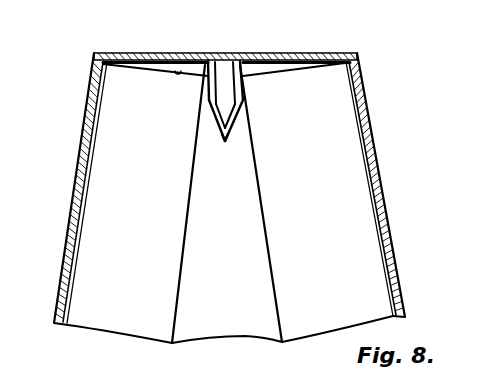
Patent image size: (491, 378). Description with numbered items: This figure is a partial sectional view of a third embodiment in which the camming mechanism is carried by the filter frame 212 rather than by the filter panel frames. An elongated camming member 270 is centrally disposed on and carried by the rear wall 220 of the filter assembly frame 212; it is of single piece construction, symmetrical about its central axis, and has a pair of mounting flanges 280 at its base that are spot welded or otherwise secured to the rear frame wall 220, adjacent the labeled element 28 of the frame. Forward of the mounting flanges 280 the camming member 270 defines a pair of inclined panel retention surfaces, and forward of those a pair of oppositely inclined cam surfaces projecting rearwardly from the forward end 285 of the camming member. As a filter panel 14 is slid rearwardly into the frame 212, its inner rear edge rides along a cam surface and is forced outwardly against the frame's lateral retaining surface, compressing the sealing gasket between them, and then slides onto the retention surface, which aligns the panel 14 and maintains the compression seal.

The panel 14 is at (262, 228).
The top member 28 is at (180, 67).
The filter frame 212 is at (62, 173).
The rear wall 220 is at (138, 52).
The camming member 270 is at (227, 62).
The mounting flange 280 is at (296, 42).
The forward end 285 is at (225, 143).